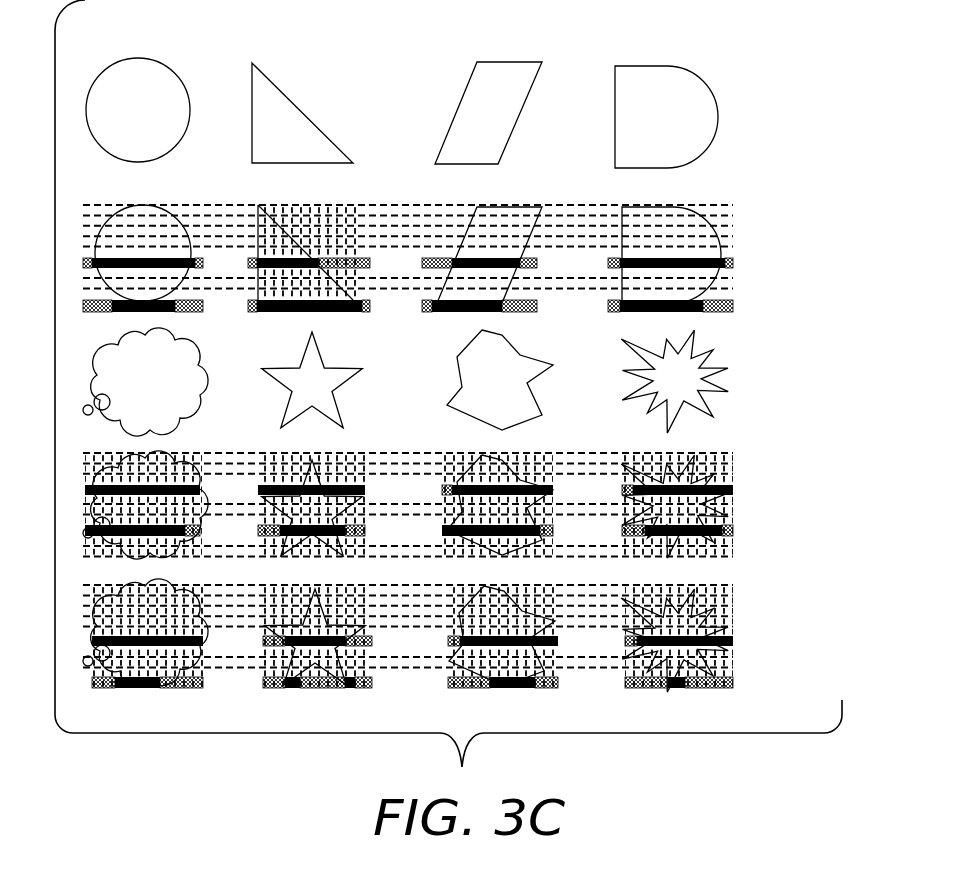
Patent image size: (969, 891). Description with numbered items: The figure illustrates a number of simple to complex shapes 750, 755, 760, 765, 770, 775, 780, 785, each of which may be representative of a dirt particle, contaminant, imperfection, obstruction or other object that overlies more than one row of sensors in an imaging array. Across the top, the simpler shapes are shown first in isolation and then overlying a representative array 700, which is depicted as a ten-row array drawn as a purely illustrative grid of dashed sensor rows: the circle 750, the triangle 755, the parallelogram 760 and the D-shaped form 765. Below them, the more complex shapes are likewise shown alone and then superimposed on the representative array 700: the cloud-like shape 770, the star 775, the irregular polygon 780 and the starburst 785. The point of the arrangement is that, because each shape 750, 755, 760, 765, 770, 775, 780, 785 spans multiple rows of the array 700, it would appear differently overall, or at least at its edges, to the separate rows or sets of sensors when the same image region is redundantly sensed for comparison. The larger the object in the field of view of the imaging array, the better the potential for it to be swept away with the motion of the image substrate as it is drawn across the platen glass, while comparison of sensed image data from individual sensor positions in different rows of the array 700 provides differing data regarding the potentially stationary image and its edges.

The representative array 700 is at (762, 258).
The circle shape 750 is at (173, 68).
The triangle shape 755 is at (303, 108).
The parallelogram shape 760 is at (542, 62).
The D shape 765 is at (715, 93).
The cloud shape 770 is at (193, 370).
The star shape 775 is at (337, 368).
The irregular polygon shape 780 is at (533, 357).
The starburst shape 785 is at (727, 365).